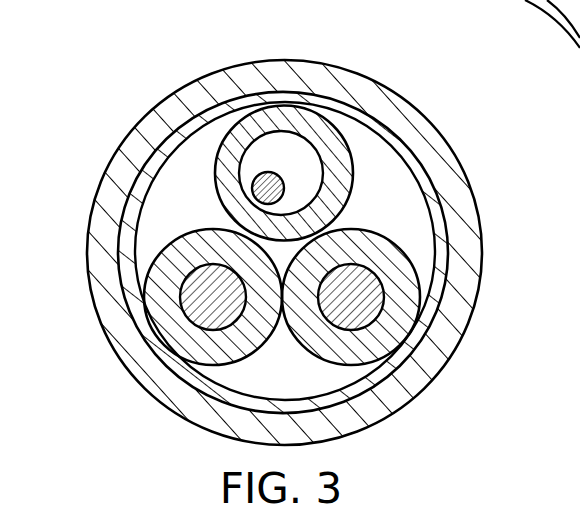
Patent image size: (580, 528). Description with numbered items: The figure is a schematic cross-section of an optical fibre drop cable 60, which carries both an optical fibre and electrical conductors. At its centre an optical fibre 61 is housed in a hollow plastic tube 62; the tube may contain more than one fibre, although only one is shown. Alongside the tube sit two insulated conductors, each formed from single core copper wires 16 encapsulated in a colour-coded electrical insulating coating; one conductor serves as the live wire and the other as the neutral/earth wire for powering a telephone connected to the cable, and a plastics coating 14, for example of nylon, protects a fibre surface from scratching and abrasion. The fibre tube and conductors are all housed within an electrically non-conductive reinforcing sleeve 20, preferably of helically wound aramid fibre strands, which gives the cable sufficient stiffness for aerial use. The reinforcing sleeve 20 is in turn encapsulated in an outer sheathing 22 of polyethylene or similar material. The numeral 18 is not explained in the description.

The optical fibre drop cable 60 is at (484, 289).
The sheathing 22 is at (207, 90).
The reinforcing sleeve 20 is at (287, 98).
The hollow plastic tube 62 is at (322, 128).
The optical fibre 61 is at (250, 187).
The conductor insulation 18 is at (167, 268).
The plastics coating 14 is at (193, 307).
The single core copper wires 16 is at (568, 30).